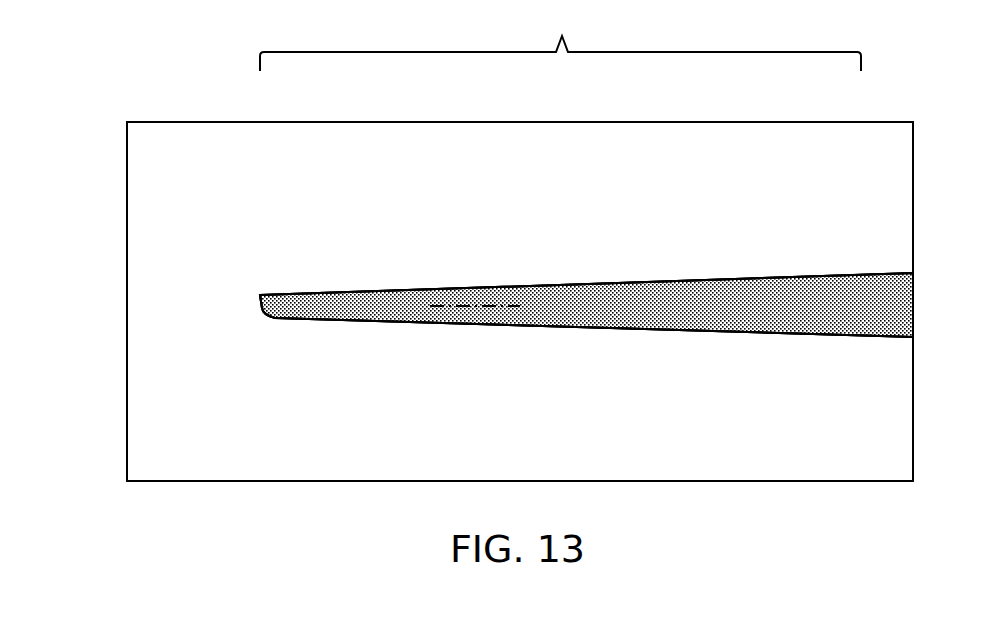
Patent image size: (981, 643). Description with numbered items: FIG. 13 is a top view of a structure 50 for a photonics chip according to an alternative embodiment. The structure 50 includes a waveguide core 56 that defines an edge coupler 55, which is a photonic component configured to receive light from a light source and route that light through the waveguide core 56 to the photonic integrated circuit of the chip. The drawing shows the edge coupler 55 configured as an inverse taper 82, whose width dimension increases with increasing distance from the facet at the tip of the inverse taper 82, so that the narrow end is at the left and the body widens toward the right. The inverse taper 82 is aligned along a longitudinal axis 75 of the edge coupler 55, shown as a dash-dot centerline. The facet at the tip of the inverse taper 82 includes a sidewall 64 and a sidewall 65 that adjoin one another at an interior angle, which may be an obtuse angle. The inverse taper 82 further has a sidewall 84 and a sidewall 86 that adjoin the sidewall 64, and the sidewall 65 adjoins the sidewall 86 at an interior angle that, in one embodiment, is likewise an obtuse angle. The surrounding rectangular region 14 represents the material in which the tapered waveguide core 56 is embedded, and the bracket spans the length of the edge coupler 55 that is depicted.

The substrate 14 is at (163, 406).
The structure 50 is at (124, 91).
The edge coupler 55 is at (560, 38).
The waveguide core 56 is at (764, 251).
The sidewall 64 is at (258, 300).
The sidewall 65 is at (262, 308).
The longitudinal axis 75 is at (500, 305).
The inverse taper 82 is at (572, 300).
The sidewall 84 is at (407, 290).
The sidewall 86 is at (412, 322).